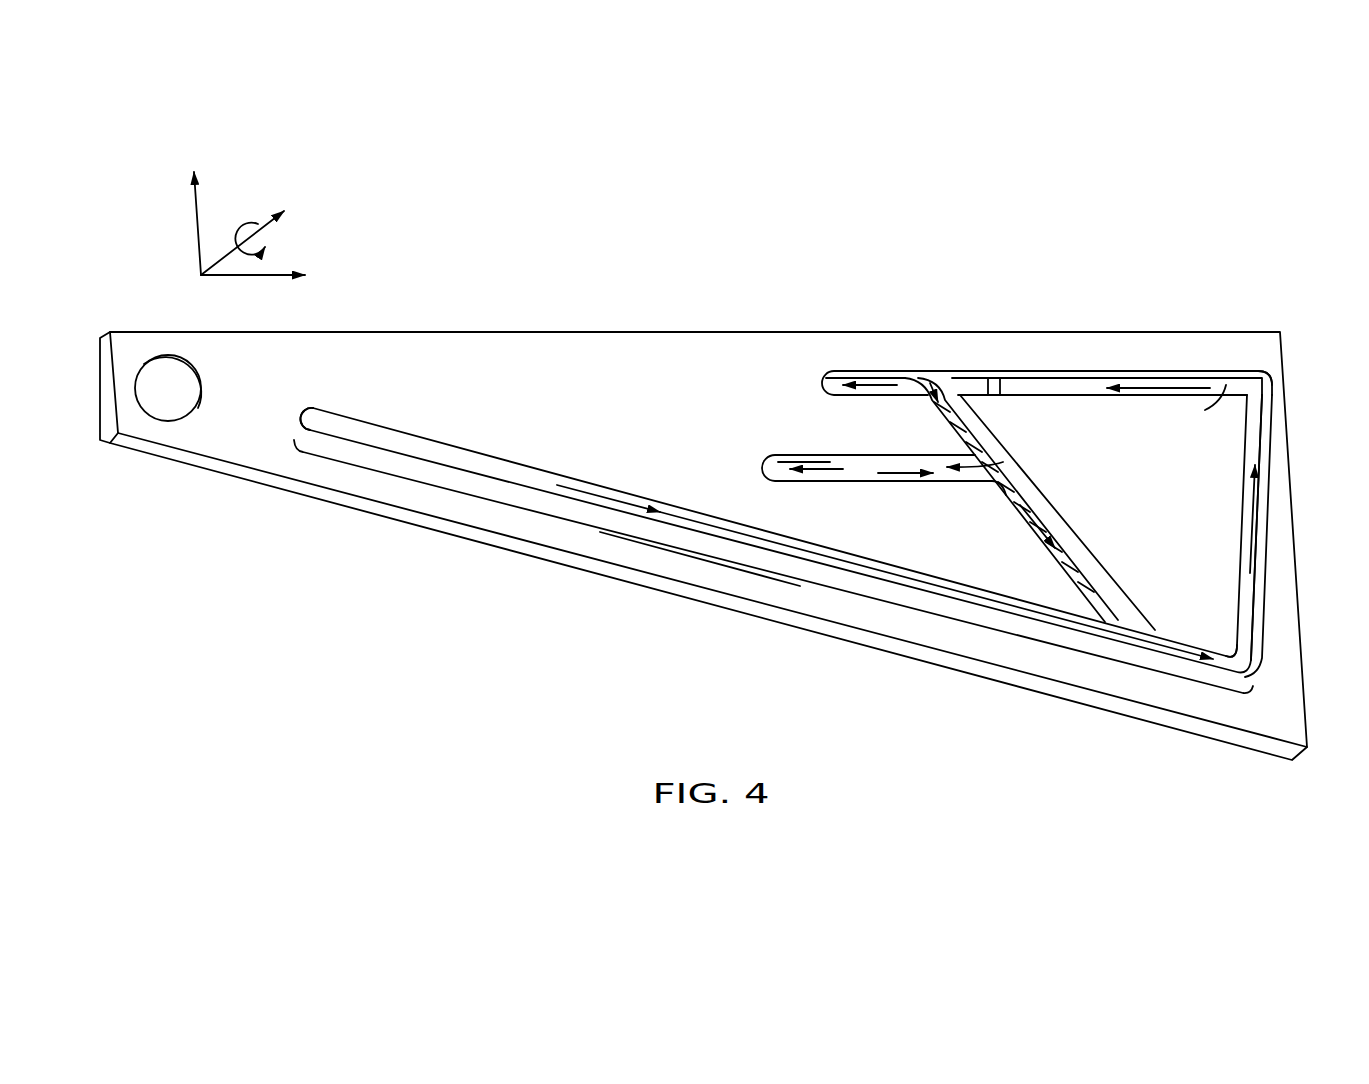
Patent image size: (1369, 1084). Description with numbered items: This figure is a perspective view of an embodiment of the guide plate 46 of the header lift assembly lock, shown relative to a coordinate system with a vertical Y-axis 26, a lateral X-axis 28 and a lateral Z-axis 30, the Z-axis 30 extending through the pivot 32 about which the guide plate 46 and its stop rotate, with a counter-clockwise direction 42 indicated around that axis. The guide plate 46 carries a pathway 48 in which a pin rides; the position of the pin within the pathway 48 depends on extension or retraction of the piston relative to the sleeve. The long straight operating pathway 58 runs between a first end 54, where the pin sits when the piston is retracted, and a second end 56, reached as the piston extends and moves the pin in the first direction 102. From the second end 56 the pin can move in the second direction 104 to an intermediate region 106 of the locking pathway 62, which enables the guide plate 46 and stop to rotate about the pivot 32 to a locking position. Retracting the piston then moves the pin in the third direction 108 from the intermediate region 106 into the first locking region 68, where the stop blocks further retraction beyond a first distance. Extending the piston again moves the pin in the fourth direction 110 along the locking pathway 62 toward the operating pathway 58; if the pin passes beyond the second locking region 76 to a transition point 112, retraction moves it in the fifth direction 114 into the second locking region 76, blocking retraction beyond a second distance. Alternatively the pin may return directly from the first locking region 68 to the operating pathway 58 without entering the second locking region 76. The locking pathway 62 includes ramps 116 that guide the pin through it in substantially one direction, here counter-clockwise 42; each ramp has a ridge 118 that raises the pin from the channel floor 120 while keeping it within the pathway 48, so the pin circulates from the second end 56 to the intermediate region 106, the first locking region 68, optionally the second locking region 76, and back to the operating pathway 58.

The vertical Y-axis 26 is at (197, 230).
The lateral X-axis 28 is at (247, 278).
The lateral Z-axis 30 is at (267, 228).
The counter-clockwise direction 42 is at (243, 221).
The pivot 32 is at (163, 402).
The guide plate 46 is at (432, 345).
The pathway 48 is at (468, 467).
The first end 54 is at (305, 422).
The second end 56 is at (1243, 667).
The operating pathway 58 is at (778, 588).
The locking pathway 62 is at (1253, 421).
The first locking region 68 is at (938, 365).
The second locking region 76 is at (995, 493).
The first direction 102 is at (605, 500).
The second direction 104 is at (1253, 524).
The intermediate region 106 is at (1264, 376).
The third direction 108 is at (1165, 385).
The fourth direction 110 is at (897, 388).
The transition point 112 is at (1022, 512).
The fifth direction 114 is at (822, 465).
The ramps 116 is at (977, 438).
The ridge 118 is at (958, 380).
The channel floor 120 is at (1033, 385).